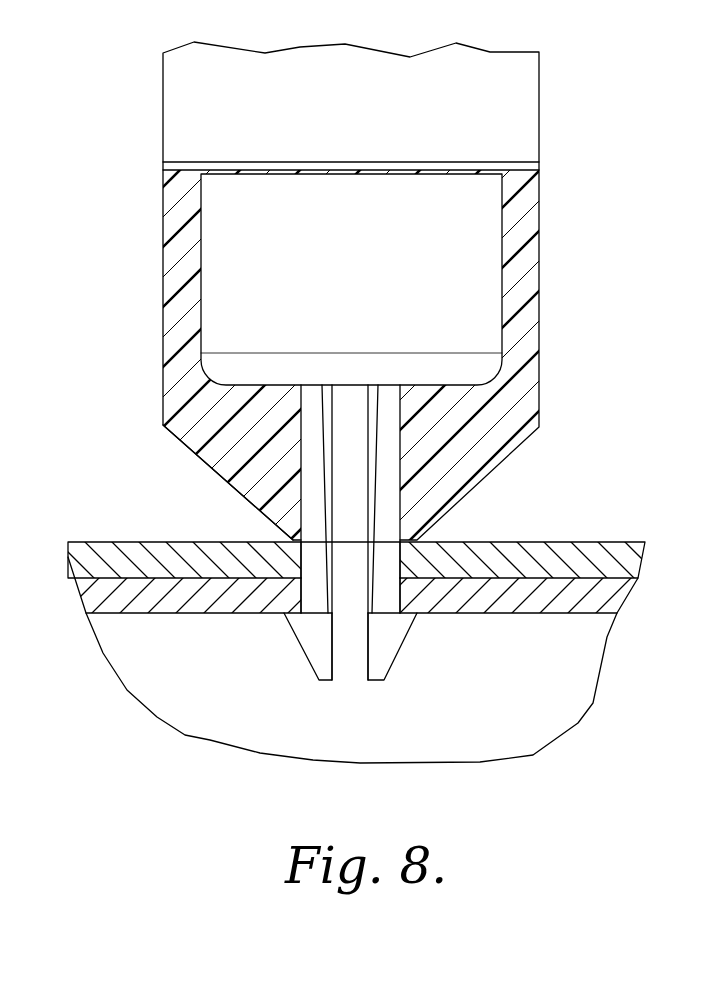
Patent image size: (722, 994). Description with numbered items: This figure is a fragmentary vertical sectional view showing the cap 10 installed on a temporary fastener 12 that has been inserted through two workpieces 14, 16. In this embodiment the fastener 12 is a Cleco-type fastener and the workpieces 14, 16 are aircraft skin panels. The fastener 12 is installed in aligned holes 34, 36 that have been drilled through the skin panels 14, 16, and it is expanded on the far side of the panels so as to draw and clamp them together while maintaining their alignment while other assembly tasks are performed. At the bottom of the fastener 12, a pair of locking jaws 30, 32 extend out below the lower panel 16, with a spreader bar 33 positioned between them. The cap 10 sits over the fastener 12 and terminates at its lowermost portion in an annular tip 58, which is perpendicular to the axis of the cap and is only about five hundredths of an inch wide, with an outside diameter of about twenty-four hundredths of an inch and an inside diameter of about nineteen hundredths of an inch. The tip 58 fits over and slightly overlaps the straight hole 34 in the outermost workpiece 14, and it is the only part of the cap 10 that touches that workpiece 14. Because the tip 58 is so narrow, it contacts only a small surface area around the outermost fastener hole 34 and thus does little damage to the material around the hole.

The cap 10 is at (548, 368).
The fastener 12 is at (555, 85).
The workpiece 14 is at (605, 557).
The workpiece 16 is at (607, 592).
The locking jaw 30 is at (317, 658).
The locking jaw 32 is at (383, 657).
The spreader bar 33 is at (350, 583).
The hole 34 is at (402, 558).
The hole 36 is at (401, 590).
The annular tip 58 is at (293, 538).